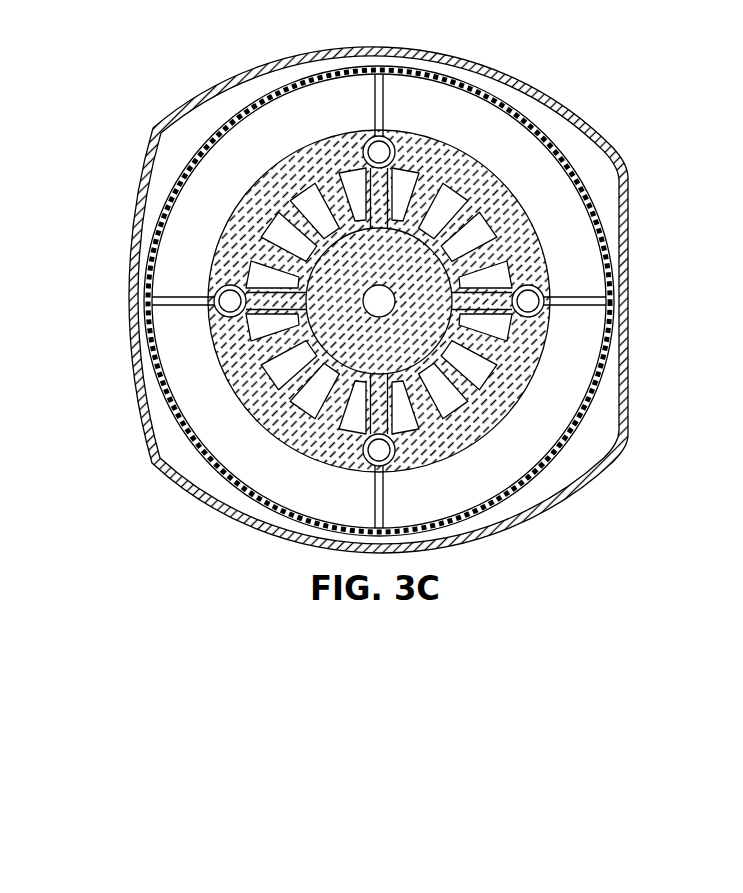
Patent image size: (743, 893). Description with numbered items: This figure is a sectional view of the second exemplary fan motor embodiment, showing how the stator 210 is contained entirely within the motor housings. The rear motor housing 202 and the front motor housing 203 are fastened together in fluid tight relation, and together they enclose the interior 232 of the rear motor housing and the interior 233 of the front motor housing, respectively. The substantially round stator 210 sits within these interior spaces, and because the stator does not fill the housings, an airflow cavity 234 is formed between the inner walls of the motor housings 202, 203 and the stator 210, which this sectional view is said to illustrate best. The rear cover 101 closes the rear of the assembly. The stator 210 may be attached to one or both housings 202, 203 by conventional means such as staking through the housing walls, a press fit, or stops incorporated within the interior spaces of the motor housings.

The rear cover 101 is at (607, 132).
The rear motor housing 202 is at (585, 186).
The front motor housing 203 is at (612, 188).
The stator 210 is at (633, 258).
The interior of rear motor housing 232 is at (542, 403).
The interior of front motor housing 233 is at (542, 418).
The airflow cavity 234 is at (509, 150).